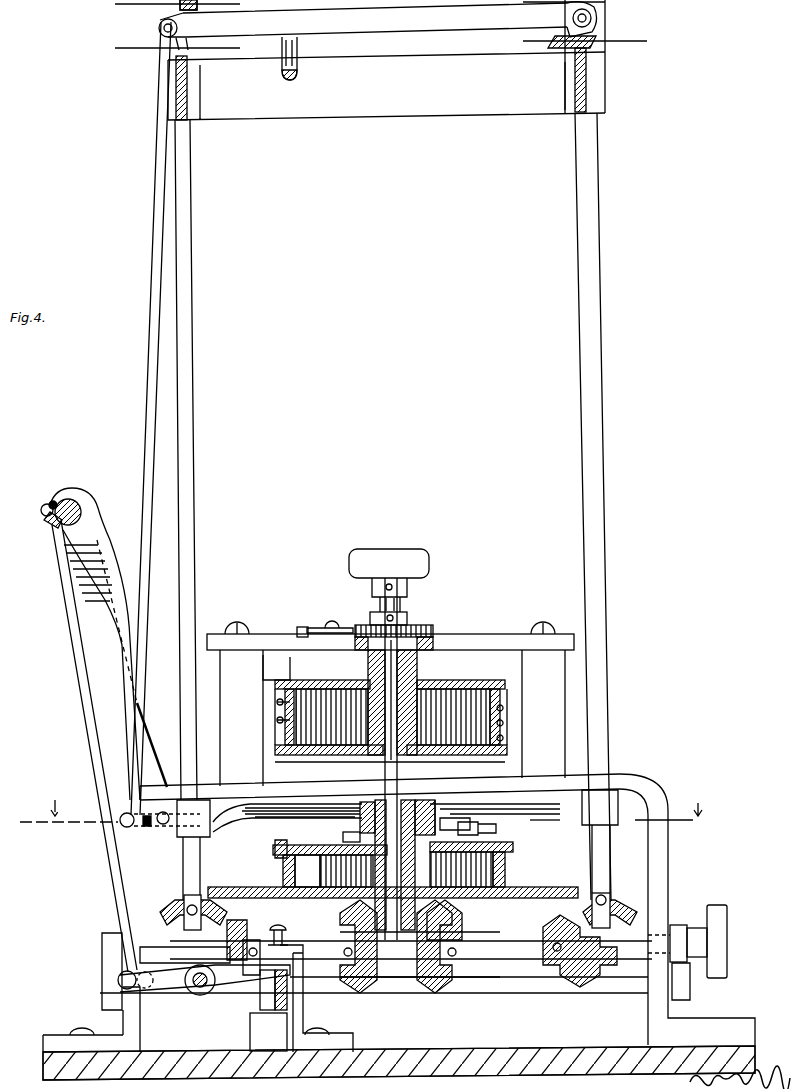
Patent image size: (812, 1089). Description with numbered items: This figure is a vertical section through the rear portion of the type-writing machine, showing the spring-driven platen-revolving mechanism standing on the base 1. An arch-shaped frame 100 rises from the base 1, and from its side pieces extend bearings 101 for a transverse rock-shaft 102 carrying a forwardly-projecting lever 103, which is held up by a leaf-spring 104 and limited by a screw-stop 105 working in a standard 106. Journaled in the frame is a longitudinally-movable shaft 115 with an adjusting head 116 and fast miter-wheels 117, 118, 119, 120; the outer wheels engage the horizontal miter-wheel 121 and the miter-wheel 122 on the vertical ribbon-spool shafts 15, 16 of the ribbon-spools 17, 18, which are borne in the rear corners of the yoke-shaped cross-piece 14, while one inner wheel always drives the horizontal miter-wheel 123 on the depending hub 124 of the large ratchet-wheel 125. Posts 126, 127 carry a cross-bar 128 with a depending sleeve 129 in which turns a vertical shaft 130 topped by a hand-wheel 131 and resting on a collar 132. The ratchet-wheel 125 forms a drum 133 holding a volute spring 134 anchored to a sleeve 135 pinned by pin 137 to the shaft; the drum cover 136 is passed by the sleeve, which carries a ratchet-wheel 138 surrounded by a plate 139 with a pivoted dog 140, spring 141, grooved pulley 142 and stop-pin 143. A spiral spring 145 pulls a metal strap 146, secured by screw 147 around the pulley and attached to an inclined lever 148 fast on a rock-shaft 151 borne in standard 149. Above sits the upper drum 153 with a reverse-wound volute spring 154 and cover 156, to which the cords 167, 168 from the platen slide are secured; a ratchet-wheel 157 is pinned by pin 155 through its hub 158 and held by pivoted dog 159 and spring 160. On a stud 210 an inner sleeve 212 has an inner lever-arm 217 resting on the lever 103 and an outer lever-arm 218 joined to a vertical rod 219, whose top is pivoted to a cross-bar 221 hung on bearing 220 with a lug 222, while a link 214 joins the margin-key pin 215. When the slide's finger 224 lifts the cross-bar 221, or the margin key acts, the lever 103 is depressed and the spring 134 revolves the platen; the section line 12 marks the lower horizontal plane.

The base 1 is at (399, 1054).
The cross-bar 12 is at (370, 818).
The yoke-shaped cross-piece 14 is at (386, 86).
The vertical shaft 15 is at (582, 417).
The vertical shaft 16 is at (186, 415).
The ribbon-spool 17 is at (607, 20).
The ribbon-spool 18 is at (162, 12).
The arch-shaped frame 100 is at (668, 893).
The bearings 101 is at (102, 1007).
The rock-shaft 102 is at (374, 985).
The lever 103 is at (290, 996).
The leaf-spring 104 is at (268, 1032).
The screw-stop 105 is at (285, 928).
The standard 106 is at (303, 1018).
The shaft 115 is at (505, 940).
The head 116 is at (715, 940).
The miter-wheel 117 is at (586, 962).
The miter-wheel 118 is at (242, 928).
The miter-wheel 119 is at (448, 928).
The miter-wheel 120 is at (360, 924).
The bracket 121 is at (618, 898).
The miter-wheel 122 is at (166, 910).
The horizontal miter-wheel 123 is at (424, 915).
The depending hub 124 is at (396, 930).
The large ratchet-wheel 125 is at (393, 881).
The post 126 is at (275, 702).
The post 127 is at (392, 718).
The cross-bar 128 is at (476, 640).
The depending sleeve 129 is at (434, 634).
The vertical shaft 130 is at (424, 668).
The hand-wheel 131 is at (389, 563).
The collar 132 is at (396, 740).
The drum 133 is at (283, 871).
The volute spring 134 is at (506, 872).
The sleeve 135 is at (455, 816).
The cover 136 is at (300, 848).
The pin 137 is at (420, 800).
The ratchet-wheel 138 is at (276, 790).
The plate 139 is at (470, 826).
The pivoted dog 140 is at (535, 810).
The spring 141 is at (478, 830).
The grooved pulley 142 is at (380, 787).
The stop-pin 143 is at (366, 796).
The spiral spring 145 is at (144, 830).
The metal strap 146 is at (228, 828).
The screw 147 is at (440, 800).
The inclined lever 148 is at (152, 752).
The standard 149 is at (112, 548).
The rock-shaft 151 is at (72, 502).
The drum 153 is at (507, 737).
The volute spring 154 is at (334, 700).
The pin 155 is at (404, 610).
The cover 156 is at (300, 680).
The ratchet-wheel 157 is at (414, 624).
The hub 158 is at (374, 594).
The pivoted dog 159 is at (344, 624).
The spring 160 is at (314, 628).
The cord 167 is at (257, 667).
The cord 168 is at (275, 721).
The stud 210 is at (198, 996).
The inner sleeve 212 is at (195, 968).
The link 214 is at (84, 690).
The pin 215 is at (42, 508).
The inner lever-arm 217 is at (222, 996).
The outer lever-arm 218 is at (167, 985).
The vertical rod 219 is at (150, 376).
The bearing 220 is at (565, 24).
The cross-bar 221 is at (375, 20).
The lug 222 is at (196, 36).
The finger 224 is at (297, 74).